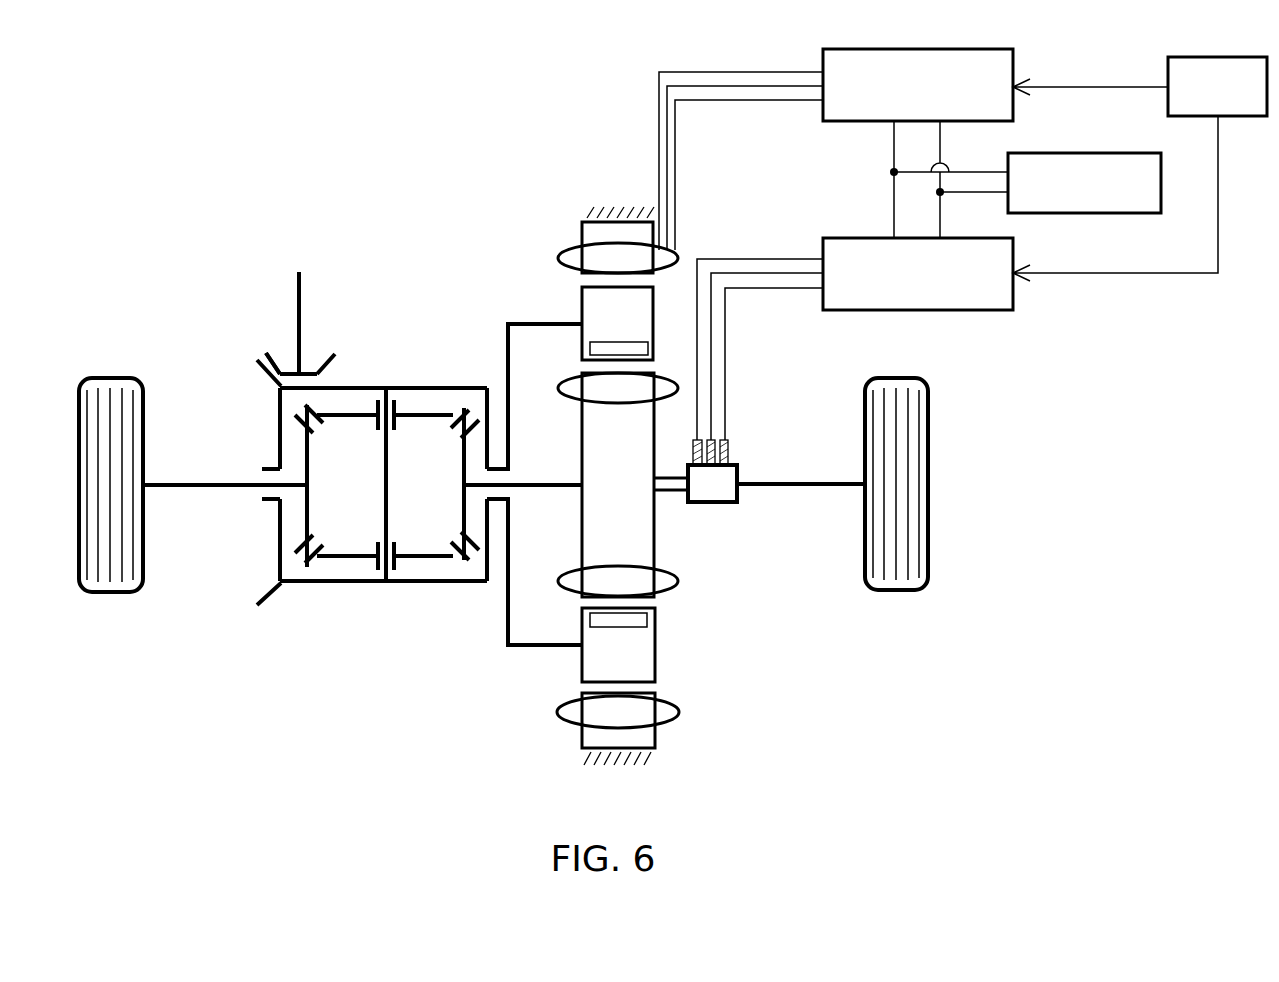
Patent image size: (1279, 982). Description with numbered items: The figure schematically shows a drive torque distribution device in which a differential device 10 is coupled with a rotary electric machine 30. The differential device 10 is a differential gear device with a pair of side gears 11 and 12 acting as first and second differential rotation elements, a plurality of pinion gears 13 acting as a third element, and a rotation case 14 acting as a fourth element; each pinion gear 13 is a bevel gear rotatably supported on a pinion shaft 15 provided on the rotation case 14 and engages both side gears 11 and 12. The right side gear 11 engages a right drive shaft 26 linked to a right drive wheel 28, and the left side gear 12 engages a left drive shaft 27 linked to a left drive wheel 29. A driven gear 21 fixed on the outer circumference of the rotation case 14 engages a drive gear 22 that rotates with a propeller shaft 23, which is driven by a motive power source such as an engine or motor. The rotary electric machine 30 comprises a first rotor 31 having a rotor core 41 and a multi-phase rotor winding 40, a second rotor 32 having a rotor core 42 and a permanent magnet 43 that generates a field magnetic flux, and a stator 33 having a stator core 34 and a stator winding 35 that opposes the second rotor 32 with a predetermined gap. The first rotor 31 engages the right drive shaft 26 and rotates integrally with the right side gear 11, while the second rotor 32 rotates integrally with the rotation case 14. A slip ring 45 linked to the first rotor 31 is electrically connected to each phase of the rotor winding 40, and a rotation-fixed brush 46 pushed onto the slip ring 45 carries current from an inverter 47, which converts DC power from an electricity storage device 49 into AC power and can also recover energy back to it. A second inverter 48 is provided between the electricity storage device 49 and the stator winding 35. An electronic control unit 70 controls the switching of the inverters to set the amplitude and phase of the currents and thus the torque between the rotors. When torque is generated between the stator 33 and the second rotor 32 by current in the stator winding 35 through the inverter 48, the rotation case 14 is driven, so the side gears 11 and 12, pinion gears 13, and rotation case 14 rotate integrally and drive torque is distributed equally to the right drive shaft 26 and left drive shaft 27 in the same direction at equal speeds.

The differential device 10 is at (422, 495).
The side gear 11 is at (462, 503).
The side gear 12 is at (312, 516).
The pinion gear 13 is at (350, 412).
The rotation case 14 is at (433, 386).
The pinion shaft 15 is at (386, 470).
The driven gear 21 is at (262, 373).
The drive gear 22 is at (273, 349).
The propeller shaft 23 is at (296, 297).
The drive shaft 26 is at (831, 487).
The drive shaft 27 is at (202, 488).
The drive wheel 28 is at (902, 590).
The drive wheel 29 is at (107, 592).
The rotary electric machine 30 is at (648, 475).
The first rotor 31 is at (580, 430).
The second rotor 32 is at (582, 302).
The stator 33 is at (580, 227).
The stator core 34 is at (638, 737).
The stator winding 35 is at (665, 712).
The rotor winding 40 is at (663, 580).
The rotor core 41 is at (637, 548).
The rotor core 42 is at (642, 657).
The permanent magnet 43 is at (637, 620).
The slip ring 45 is at (738, 472).
The brush 46 is at (728, 443).
The inverter 47 is at (1015, 303).
The inverter 48 is at (822, 53).
The electricity storage device 49 is at (1090, 213).
The electronic control unit 70 is at (1167, 62).